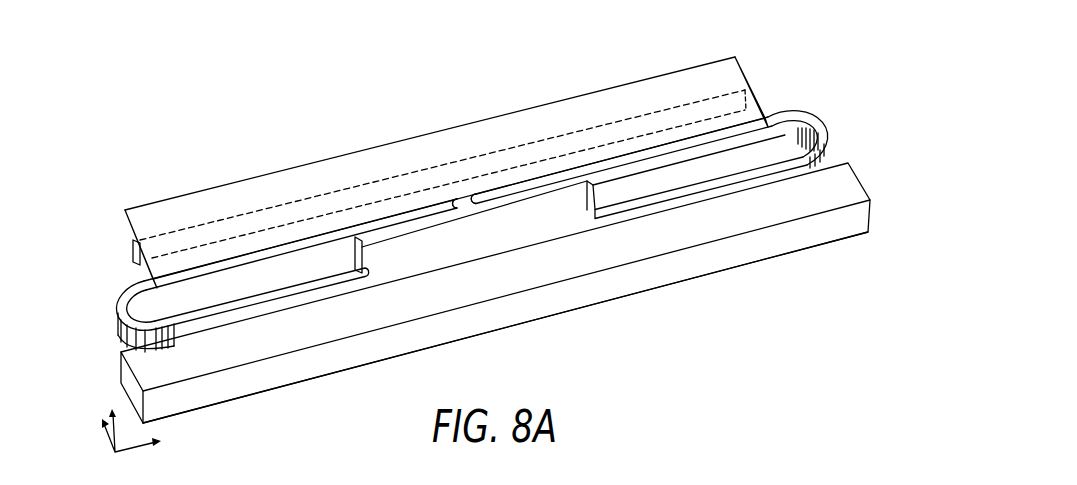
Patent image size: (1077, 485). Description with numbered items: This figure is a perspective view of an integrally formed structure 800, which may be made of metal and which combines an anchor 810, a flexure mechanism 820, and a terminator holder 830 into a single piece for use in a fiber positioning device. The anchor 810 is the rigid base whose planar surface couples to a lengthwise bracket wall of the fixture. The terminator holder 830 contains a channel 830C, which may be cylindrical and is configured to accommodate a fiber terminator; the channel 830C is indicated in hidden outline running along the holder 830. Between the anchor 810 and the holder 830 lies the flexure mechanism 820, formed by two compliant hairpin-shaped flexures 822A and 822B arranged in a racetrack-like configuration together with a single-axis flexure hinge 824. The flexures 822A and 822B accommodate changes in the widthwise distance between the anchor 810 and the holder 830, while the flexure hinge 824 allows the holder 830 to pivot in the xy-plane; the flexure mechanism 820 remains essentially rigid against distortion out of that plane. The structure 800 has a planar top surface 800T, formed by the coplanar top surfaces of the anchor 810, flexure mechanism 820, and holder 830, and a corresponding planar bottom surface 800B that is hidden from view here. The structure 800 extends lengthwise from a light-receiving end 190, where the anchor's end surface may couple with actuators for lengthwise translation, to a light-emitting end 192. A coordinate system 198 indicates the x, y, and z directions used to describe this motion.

The integrally formed structure 800 is at (148, 60).
The planar top surface 800T is at (247, 188).
The planar bottom surface 800B is at (532, 300).
The anchor 810 is at (735, 267).
The flexure mechanism 820 is at (858, 112).
The hairpin-shaped flexure 822A is at (118, 311).
The hairpin-shaped flexure 822B is at (833, 140).
The single-axis flexure hinge 824 is at (465, 195).
The terminator holder 830 is at (567, 95).
The channel 830C is at (340, 189).
The light-receiving end 190 is at (84, 226).
The light-emitting end 192 is at (815, 74).
The coordinate system 198 is at (84, 438).